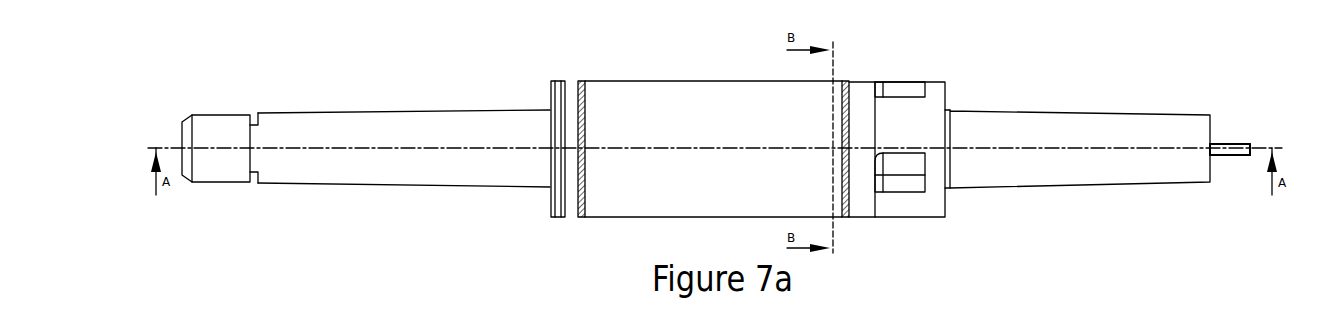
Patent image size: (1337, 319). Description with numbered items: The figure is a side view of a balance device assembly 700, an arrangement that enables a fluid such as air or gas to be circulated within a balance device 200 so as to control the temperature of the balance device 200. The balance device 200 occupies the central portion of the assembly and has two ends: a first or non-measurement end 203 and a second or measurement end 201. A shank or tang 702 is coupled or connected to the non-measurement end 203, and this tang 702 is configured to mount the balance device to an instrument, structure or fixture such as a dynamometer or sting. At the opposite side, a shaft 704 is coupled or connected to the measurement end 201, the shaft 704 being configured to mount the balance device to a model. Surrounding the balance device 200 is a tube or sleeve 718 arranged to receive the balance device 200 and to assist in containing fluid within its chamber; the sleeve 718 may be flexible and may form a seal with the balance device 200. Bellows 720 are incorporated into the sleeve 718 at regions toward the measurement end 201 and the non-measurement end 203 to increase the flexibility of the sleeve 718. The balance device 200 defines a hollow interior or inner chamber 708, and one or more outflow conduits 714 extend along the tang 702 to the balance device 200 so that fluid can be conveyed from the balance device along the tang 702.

The balance device assembly 700 is at (218, 62).
The shaft 704 is at (413, 112).
The balance device 200 is at (591, 50).
The measurement end 201 is at (560, 69).
The sleeve 718 is at (688, 79).
The bellows 720 is at (580, 216).
The non-measurement end 203 is at (879, 71).
The tang 702 is at (1087, 112).
The inner chamber 708 is at (1239, 143).
The conduits 714 is at (1230, 149).